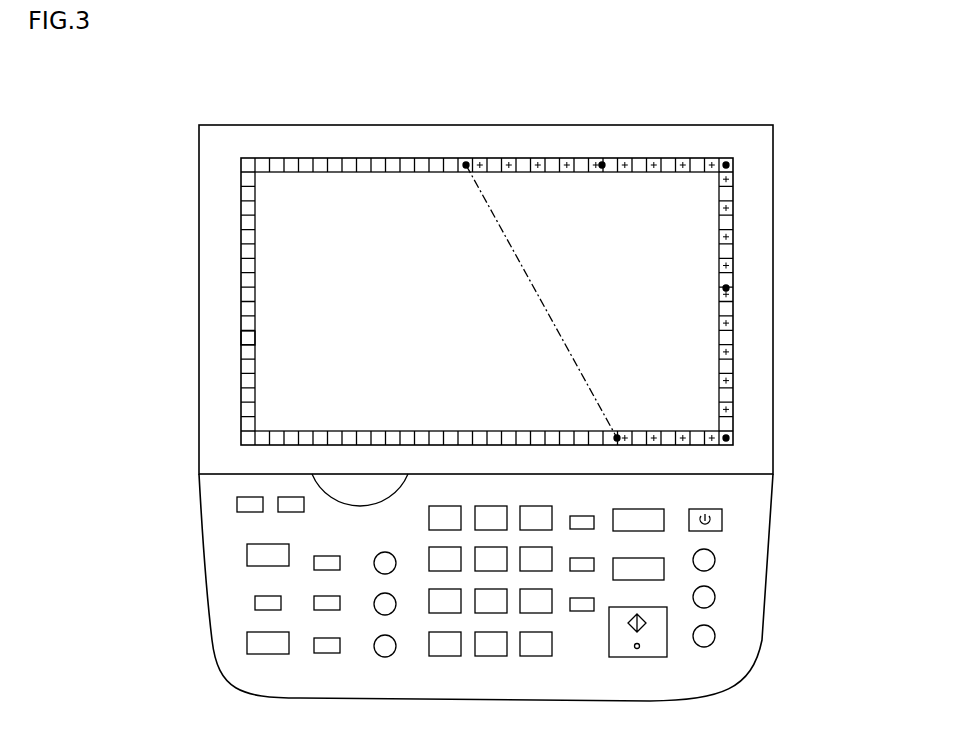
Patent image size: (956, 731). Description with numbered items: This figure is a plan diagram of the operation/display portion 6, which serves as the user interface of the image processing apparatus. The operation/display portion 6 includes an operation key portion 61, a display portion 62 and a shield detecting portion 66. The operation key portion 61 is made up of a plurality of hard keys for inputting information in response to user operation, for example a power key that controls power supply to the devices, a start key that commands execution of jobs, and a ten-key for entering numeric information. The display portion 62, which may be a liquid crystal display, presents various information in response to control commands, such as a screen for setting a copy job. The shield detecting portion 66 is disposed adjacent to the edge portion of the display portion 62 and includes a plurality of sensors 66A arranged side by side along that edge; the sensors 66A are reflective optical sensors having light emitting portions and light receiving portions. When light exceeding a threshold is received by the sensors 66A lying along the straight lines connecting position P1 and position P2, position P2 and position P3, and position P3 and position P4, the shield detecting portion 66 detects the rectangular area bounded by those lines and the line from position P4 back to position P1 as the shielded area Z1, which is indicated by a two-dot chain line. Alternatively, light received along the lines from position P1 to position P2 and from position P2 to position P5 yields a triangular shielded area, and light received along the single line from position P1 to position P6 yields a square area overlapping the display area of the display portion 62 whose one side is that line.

The operation/display portion 6 is at (200, 107).
The operation key portion 61 is at (222, 530).
The display portion 62 is at (292, 254).
The shield detecting portion 66 is at (235, 283).
The sensors 66A is at (240, 342).
The position P1 is at (466, 162).
The position P2 is at (726, 162).
The position P3 is at (730, 438).
The position P4 is at (617, 445).
The position P5 is at (730, 288).
The position P6 is at (602, 162).
The shielded area Z1 is at (558, 275).